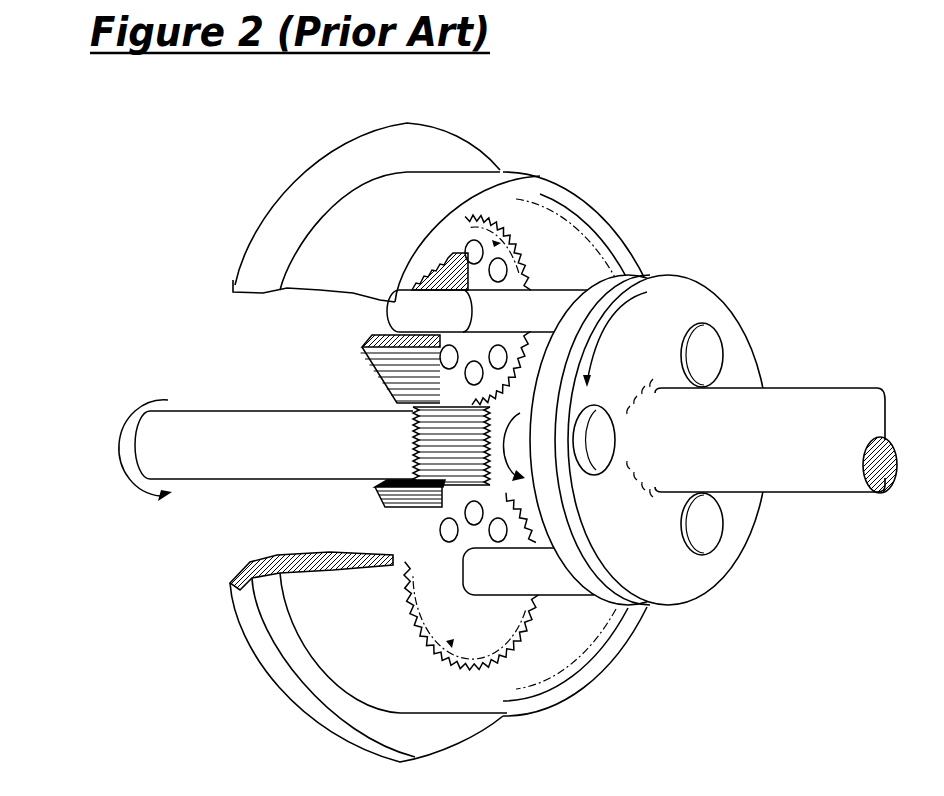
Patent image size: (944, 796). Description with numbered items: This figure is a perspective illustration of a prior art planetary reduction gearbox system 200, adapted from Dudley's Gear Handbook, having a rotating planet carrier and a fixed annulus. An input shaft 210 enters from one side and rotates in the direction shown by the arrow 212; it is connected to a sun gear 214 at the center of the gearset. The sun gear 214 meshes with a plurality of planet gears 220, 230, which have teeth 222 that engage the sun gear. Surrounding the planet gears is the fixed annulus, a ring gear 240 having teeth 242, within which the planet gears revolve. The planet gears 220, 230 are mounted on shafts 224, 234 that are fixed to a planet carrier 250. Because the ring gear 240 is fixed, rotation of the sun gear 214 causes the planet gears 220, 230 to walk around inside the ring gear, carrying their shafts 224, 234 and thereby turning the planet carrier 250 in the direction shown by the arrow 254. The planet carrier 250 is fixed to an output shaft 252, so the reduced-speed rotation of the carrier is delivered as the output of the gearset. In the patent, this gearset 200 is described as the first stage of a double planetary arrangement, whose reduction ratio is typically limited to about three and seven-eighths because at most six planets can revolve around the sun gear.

The planetary reduction gearbox system 200 is at (178, 145).
The input shaft 210 is at (230, 410).
The arrow 212 is at (130, 410).
The sun gear 214 is at (412, 447).
The planet gear 220 is at (513, 256).
The teeth 222 is at (357, 346).
The shaft 224 is at (460, 310).
The planet gear 230 is at (358, 518).
The shaft 234 is at (555, 597).
The ring gear 240 is at (445, 128).
The teeth 242 is at (393, 565).
The planet carrier 250 is at (690, 598).
The output shaft 252 is at (793, 498).
The arrow 254 is at (625, 308).